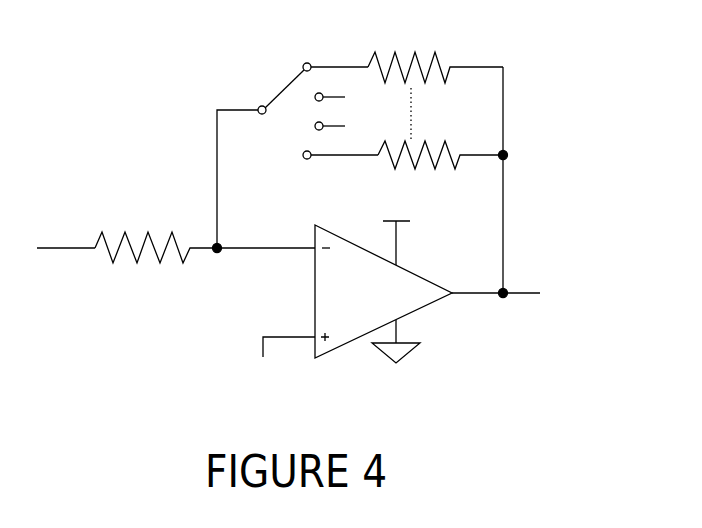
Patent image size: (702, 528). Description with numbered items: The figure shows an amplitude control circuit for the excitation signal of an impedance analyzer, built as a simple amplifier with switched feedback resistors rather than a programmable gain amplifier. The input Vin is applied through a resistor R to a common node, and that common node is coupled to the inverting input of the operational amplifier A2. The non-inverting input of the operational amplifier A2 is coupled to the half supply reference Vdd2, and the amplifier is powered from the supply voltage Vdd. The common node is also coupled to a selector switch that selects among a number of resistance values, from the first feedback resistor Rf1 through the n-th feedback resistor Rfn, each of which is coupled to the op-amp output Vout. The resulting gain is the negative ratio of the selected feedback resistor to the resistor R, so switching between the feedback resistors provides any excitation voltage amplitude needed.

The resistor R is at (156, 231).
The first feedback resistor Rf1 is at (435, 48).
The n-th feedback resistor Rfn is at (440, 174).
The operational amplifier A2 is at (383, 291).
The input Vin is at (65, 234).
The op-amp output Vout is at (534, 280).
The supply voltage Vdd is at (396, 231).
The half supply voltage reference Vdd2 is at (275, 360).